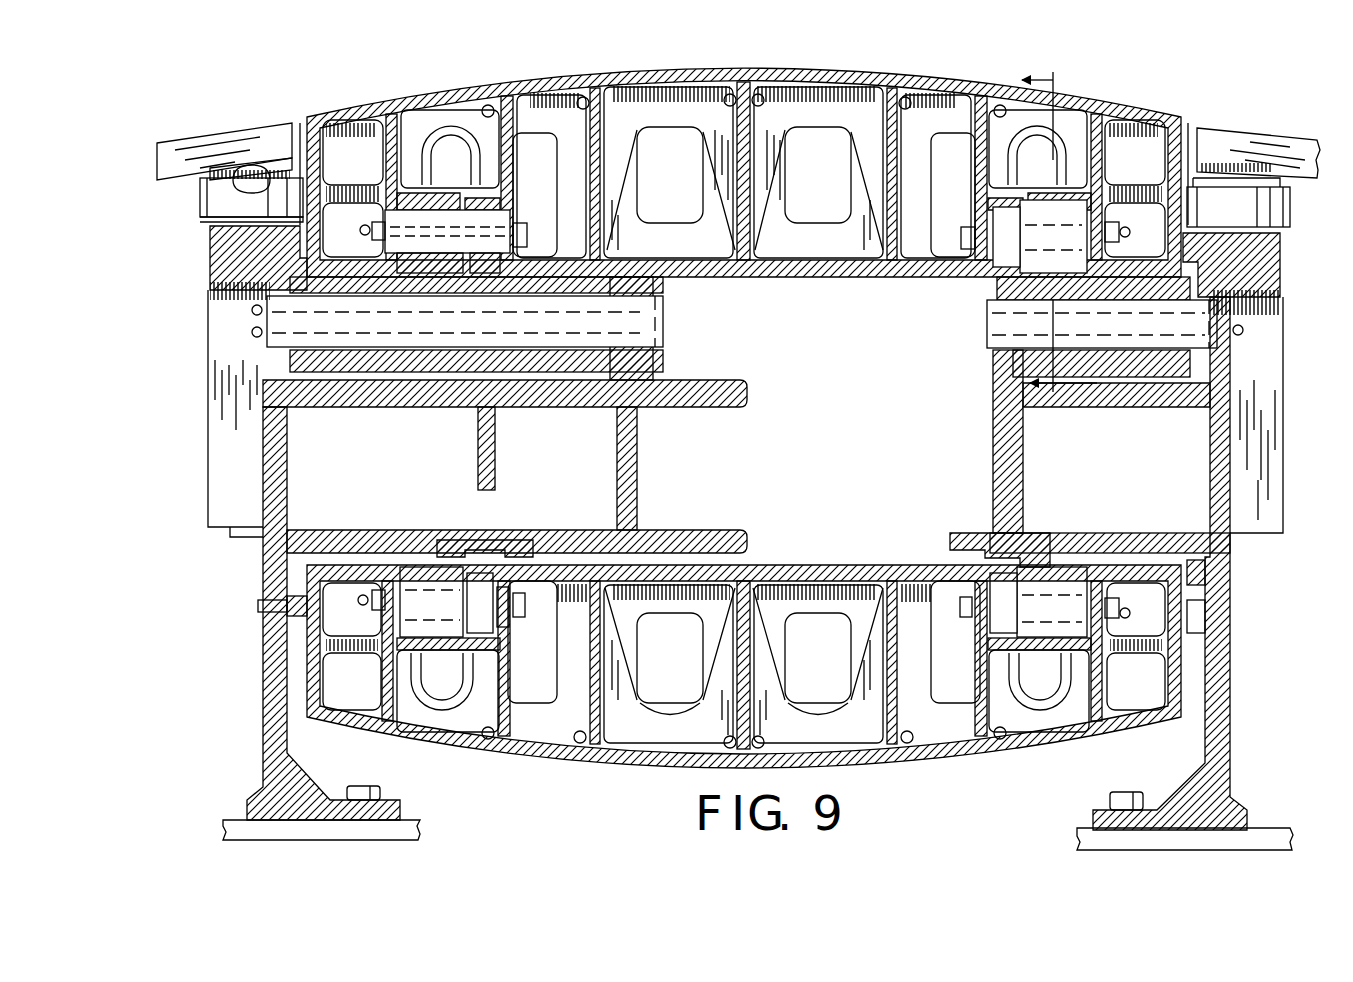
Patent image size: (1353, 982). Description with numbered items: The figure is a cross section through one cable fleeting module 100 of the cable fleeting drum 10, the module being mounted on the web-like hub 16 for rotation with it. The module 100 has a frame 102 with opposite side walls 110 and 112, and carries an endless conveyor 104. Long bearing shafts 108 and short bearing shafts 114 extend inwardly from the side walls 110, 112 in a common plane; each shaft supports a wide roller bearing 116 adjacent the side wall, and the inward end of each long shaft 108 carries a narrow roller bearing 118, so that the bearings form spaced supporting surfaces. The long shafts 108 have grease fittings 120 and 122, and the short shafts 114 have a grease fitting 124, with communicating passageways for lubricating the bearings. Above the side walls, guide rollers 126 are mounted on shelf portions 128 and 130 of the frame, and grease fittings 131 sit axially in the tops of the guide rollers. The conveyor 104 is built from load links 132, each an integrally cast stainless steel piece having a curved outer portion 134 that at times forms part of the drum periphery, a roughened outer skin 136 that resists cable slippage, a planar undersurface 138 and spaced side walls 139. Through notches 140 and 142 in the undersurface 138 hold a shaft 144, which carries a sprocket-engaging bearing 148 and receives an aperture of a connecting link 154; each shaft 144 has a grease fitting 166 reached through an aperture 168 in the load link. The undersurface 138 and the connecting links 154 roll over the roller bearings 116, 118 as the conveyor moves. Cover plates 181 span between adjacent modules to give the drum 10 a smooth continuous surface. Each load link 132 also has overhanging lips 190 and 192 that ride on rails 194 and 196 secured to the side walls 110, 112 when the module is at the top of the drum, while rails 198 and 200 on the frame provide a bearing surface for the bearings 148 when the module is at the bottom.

The cable fleeting drum 10 is at (1077, 257).
The web-like hub 16 is at (243, 822).
The cable fleeting module 100 is at (252, 118).
The frame 102 is at (1240, 606).
The conveyor 104 is at (1172, 116).
The long bearing shaft 108 is at (652, 318).
The side wall 110 is at (1222, 468).
The side wall 112 is at (270, 503).
The short bearing shaft 114 is at (992, 324).
The wide roller bearing 116 is at (345, 365).
The narrow roller bearing 118 is at (540, 365).
The grease fitting 120 is at (251, 311).
The grease fitting 122 is at (251, 333).
The grease fitting 124 is at (1245, 330).
The guide roller 126 is at (222, 203).
The shelf portion 128 is at (1255, 252).
The shelf portion 130 is at (235, 255).
The grease fitting 131 is at (236, 170).
The load link 132 is at (1150, 108).
The curved outer portion 134 is at (728, 110).
The roughened outer skin 136 is at (845, 84).
The planar undersurface 138 is at (775, 280).
The side wall 139 is at (306, 132).
The through notch 140 is at (1098, 195).
The through notch 142 is at (392, 170).
The shaft 144 is at (505, 222).
The sprocket-engaging bearing 148 is at (992, 588).
The connecting link 154 is at (445, 196).
The grease fitting 166 is at (364, 226).
The aperture 168 is at (372, 232).
The cover plate 181 is at (160, 145).
The overhanging lip 190 is at (1198, 586).
The overhanging lip 192 is at (280, 562).
The rail 194 is at (1200, 630).
The rail 196 is at (275, 610).
The rail 198 is at (990, 540).
The rail 200 is at (500, 541).